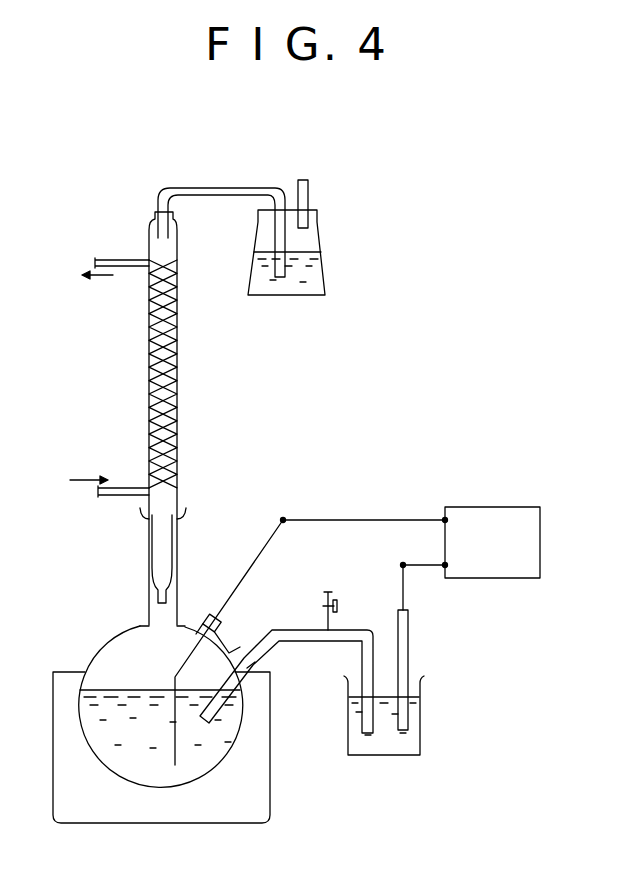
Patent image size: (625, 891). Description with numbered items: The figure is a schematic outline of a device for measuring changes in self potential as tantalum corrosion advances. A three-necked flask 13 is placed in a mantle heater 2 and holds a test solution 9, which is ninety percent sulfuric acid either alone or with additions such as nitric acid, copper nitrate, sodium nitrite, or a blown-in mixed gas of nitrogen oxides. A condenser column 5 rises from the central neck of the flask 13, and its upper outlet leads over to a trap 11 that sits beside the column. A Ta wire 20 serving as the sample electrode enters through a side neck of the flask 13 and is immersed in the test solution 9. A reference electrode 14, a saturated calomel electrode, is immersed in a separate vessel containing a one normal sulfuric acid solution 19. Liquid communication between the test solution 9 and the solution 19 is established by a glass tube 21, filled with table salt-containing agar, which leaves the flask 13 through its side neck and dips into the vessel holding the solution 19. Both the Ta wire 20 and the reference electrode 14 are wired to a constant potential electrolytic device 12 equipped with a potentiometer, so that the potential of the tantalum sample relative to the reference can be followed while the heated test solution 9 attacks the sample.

The mantle heater 2 is at (262, 804).
The condenser column 5 is at (179, 396).
The test solution 9 is at (103, 752).
The trap 11 is at (324, 274).
The constant potential electrolytic device 12 is at (512, 517).
The three-necked flask 13 is at (93, 654).
The reference electrode 14 is at (409, 648).
The 1N sulfuric acid solution 19 is at (390, 756).
The Ta wire 20 is at (250, 576).
The glass tube 21 is at (300, 645).